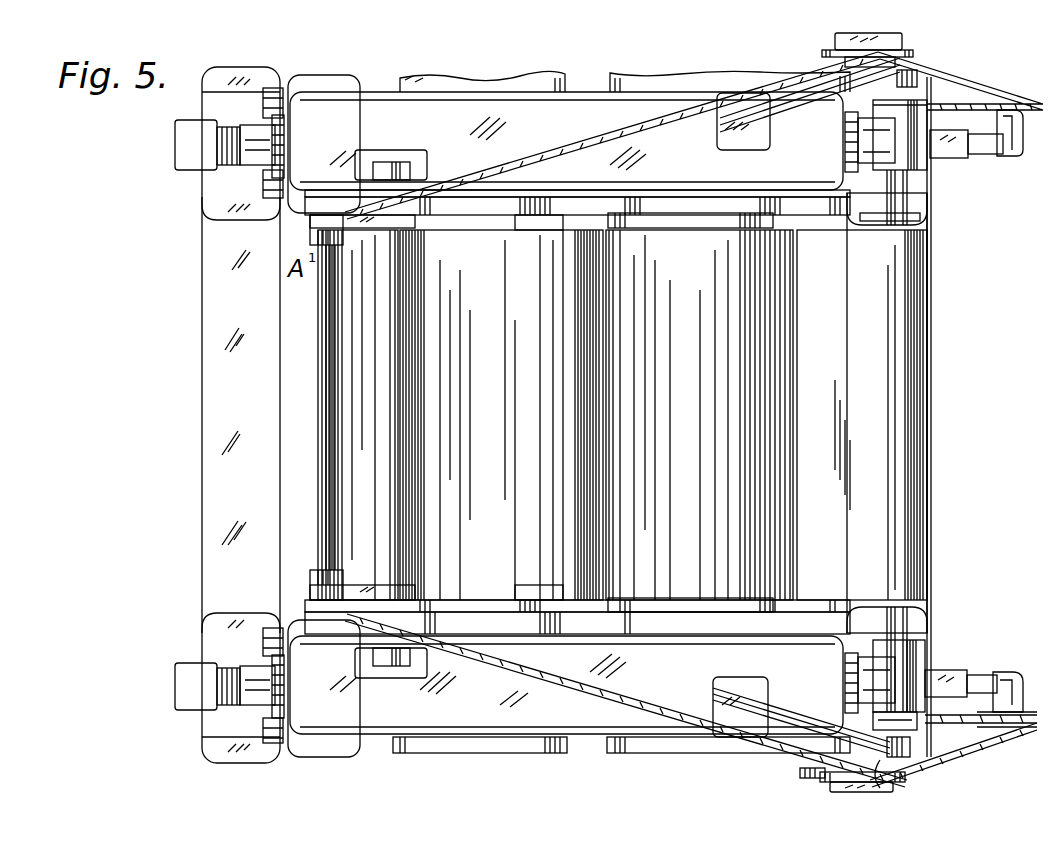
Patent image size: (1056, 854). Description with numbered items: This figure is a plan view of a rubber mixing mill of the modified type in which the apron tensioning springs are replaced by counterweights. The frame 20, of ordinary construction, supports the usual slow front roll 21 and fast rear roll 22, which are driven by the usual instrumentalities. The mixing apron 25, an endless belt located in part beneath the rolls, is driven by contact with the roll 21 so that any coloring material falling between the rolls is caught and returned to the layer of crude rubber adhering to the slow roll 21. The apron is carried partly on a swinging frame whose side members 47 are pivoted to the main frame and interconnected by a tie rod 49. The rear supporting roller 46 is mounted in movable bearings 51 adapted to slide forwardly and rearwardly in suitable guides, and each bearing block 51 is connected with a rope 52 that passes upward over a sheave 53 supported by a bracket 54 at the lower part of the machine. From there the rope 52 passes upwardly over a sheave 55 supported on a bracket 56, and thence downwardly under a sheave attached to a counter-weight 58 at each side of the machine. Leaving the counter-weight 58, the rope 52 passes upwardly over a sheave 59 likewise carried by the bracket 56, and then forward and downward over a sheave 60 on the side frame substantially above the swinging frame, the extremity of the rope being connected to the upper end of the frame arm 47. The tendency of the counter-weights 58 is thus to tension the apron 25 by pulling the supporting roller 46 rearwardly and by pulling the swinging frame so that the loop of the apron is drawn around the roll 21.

The frame 20 is at (569, 688).
The slow front roll 21 is at (501, 415).
The fast rear roll 22 is at (699, 415).
The mixing apron 25 is at (622, 415).
The rear supporting roller 46 is at (926, 600).
The side members 47 is at (388, 228).
The tie rod 49 is at (336, 283).
The movable bearings 51 is at (916, 670).
The rope 52 is at (572, 148).
The sheave 53 is at (996, 703).
The bracket 54 is at (960, 158).
The sheave 55 is at (918, 757).
The bracket 56 is at (800, 722).
The counter-weight 58 is at (895, 40).
The sheave 59 is at (810, 772).
The sheave 60 is at (404, 162).